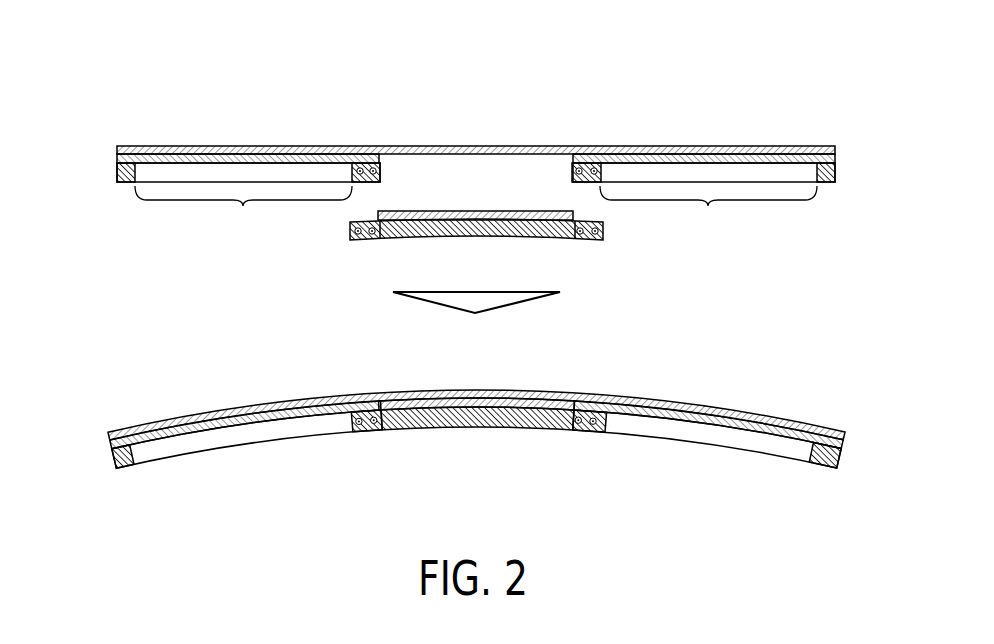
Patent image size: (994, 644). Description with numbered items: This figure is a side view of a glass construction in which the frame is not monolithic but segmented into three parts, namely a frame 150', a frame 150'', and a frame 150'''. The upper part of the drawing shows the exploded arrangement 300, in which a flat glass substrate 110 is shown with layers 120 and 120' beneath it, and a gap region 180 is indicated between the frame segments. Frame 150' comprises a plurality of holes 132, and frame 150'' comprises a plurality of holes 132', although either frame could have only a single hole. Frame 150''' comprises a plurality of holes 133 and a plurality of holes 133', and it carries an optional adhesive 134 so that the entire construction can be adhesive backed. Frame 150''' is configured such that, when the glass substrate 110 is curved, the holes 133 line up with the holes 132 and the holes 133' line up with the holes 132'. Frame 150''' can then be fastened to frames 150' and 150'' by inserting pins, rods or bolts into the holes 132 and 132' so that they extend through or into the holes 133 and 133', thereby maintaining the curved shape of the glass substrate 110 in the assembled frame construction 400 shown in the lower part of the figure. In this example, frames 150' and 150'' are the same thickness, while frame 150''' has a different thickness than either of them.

The exploded assembly of display device 300 is at (680, 91).
The frame construction 400 is at (745, 386).
The glass substrate 110 is at (782, 152).
The adhesive layer (right) 120 is at (738, 145).
The adhesive layer (left) 120' is at (211, 145).
The holes 132 is at (572, 127).
The holes 132' is at (381, 127).
The holes 133 is at (601, 263).
The holes 133' is at (349, 263).
The adhesive 134 is at (477, 215).
The frame 150' is at (863, 183).
The frame 150'' is at (87, 184).
The frame 150''' is at (530, 251).
The gap region 180 is at (476, 215).